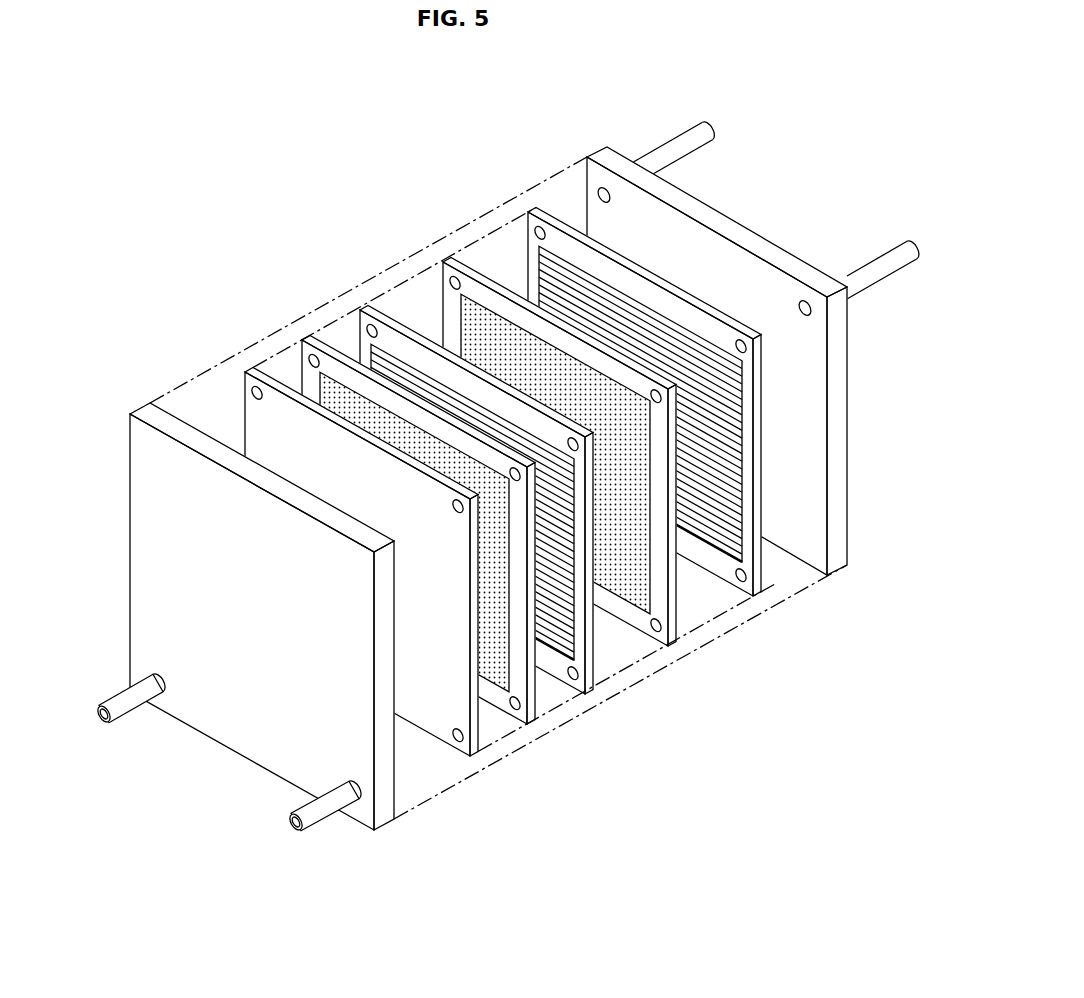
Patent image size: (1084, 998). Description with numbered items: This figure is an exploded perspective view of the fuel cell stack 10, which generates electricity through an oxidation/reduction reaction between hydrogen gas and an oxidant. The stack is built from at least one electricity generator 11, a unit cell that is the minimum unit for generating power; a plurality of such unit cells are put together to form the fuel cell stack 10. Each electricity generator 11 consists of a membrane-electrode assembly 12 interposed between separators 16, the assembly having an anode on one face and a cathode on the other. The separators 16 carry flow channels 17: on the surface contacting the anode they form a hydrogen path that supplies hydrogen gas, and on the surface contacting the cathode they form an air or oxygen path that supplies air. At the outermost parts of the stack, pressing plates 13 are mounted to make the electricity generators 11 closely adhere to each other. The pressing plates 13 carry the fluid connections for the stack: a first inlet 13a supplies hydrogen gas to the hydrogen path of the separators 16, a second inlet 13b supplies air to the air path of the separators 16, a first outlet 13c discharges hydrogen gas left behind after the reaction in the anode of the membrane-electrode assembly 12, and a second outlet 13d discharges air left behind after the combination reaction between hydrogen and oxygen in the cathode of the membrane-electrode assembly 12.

The fuel cell stack 10 is at (810, 126).
The electricity generator 11 is at (533, 506).
The membrane-electrode assembly 12 is at (510, 501).
The pressing plate 13 is at (845, 489).
The first inlet 13a is at (677, 135).
The second inlet 13b is at (889, 274).
The first outlet 13c is at (323, 822).
The second outlet 13d is at (115, 693).
The separator 16 is at (522, 500).
The flow channel 17 is at (715, 533).